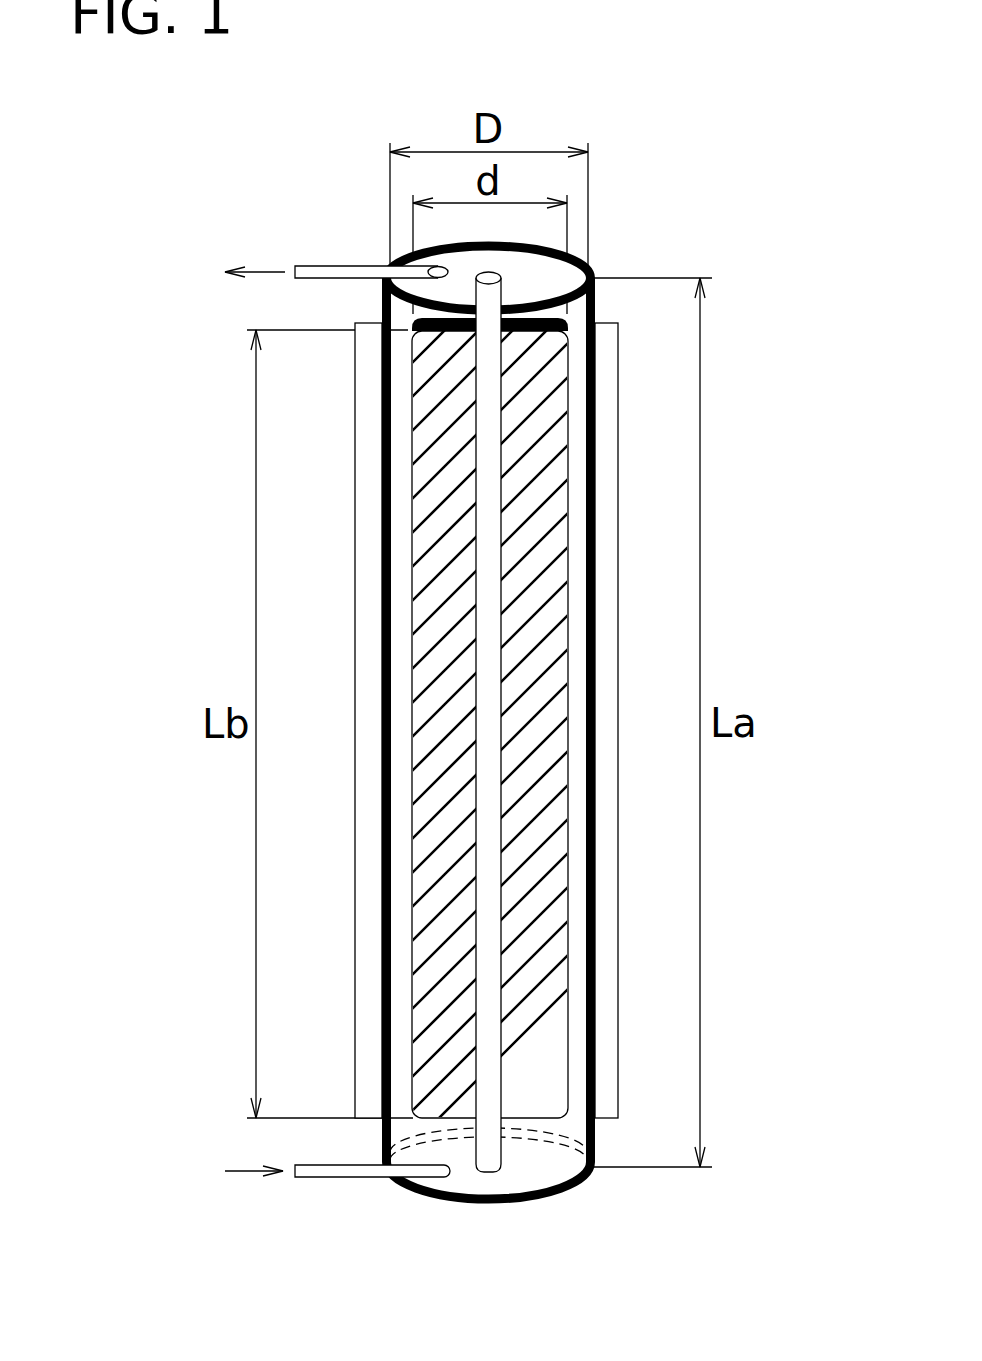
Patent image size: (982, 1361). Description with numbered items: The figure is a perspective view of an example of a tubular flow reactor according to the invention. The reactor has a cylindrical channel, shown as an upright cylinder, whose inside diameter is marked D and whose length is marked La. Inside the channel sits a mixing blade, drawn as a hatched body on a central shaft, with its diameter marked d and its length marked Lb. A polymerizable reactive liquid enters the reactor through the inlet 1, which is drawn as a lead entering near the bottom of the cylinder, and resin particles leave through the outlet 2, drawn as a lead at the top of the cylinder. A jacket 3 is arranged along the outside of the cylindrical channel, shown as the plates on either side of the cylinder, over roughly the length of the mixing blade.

The inlet 1 is at (343, 1178).
The outlet 2 is at (337, 265).
The jacket 3 is at (355, 560).